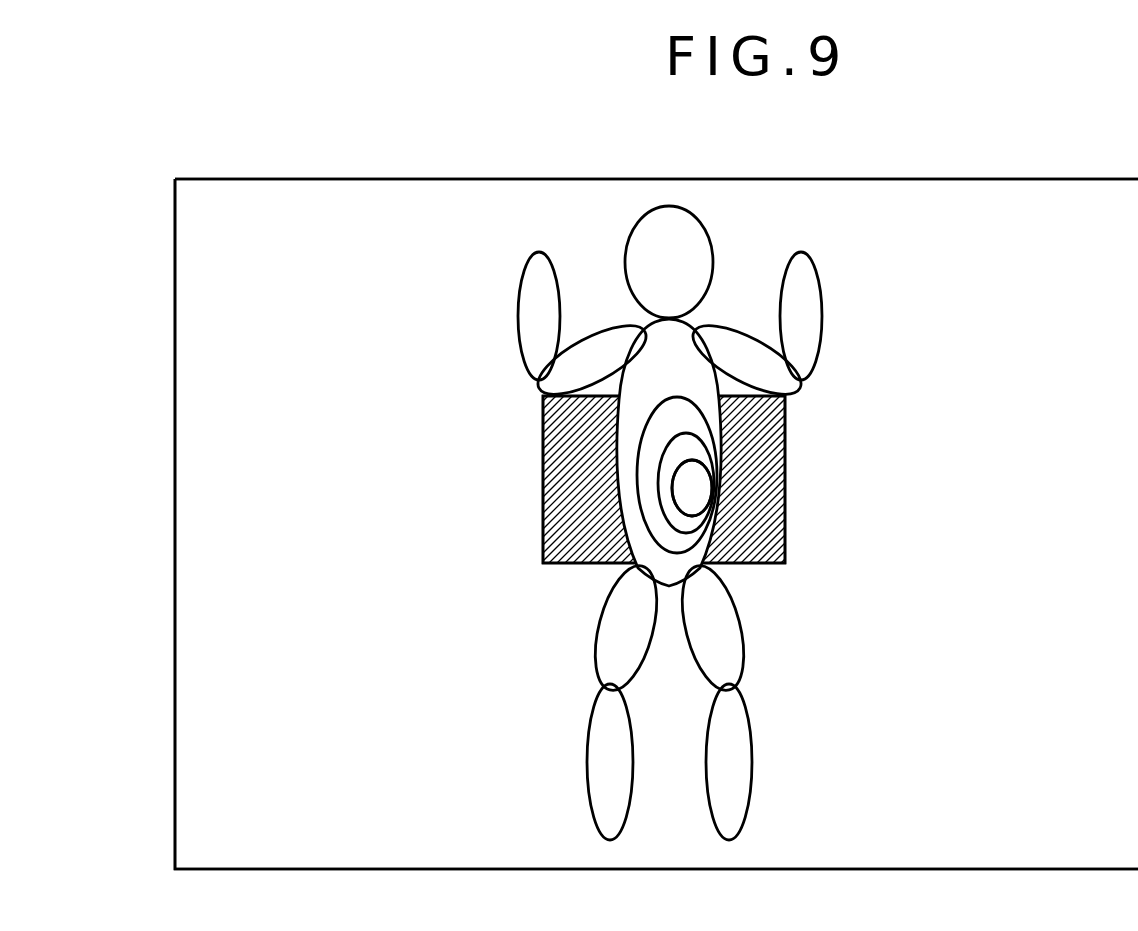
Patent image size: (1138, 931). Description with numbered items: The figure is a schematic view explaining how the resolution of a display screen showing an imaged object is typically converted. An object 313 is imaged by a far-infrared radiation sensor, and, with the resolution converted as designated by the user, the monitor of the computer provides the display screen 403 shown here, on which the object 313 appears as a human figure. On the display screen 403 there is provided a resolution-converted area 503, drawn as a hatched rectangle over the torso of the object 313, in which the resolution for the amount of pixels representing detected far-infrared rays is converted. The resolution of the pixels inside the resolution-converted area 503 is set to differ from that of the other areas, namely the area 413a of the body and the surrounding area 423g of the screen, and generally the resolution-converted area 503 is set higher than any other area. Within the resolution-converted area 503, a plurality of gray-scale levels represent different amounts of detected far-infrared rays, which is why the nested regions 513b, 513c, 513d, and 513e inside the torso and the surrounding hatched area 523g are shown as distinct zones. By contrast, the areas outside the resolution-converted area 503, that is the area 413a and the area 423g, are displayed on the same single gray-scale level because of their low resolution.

The display screen 403 is at (1098, 178).
The area 423g is at (302, 242).
The object 313 is at (692, 213).
The area 413a is at (667, 348).
The resolution-converted area 503 is at (543, 398).
The area 513b is at (623, 455).
The area 513c is at (647, 489).
The area 513d is at (698, 450).
The area 513e is at (698, 488).
The area 523g is at (757, 537).